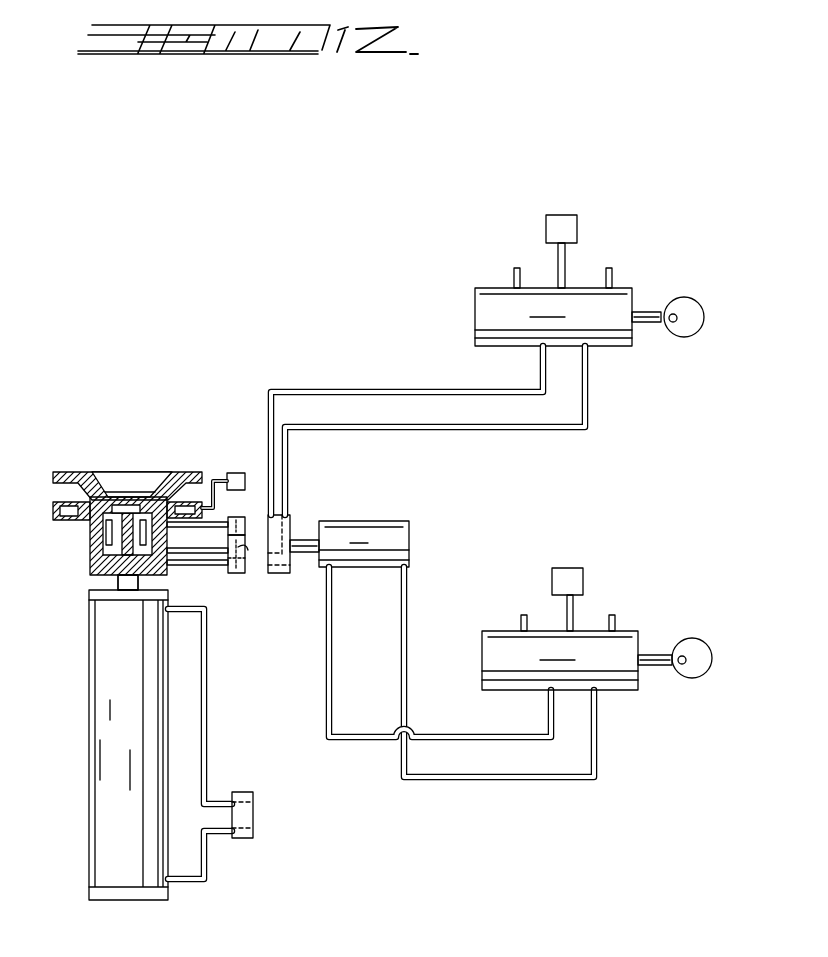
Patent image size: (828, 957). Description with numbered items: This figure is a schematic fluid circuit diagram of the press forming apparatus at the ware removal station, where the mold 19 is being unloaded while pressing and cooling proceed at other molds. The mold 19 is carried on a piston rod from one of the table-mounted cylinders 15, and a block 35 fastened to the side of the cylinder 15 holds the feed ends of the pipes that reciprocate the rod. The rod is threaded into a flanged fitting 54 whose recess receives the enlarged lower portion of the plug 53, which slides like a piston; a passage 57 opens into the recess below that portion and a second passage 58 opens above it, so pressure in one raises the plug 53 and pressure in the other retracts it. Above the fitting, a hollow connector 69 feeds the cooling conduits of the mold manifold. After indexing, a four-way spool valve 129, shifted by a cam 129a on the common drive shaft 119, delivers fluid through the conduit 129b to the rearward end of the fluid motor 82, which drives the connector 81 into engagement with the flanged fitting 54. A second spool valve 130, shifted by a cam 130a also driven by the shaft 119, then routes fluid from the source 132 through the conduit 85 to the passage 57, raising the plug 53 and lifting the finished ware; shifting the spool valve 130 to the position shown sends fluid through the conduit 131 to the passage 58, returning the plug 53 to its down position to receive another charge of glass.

The cylinder 15 is at (105, 683).
The mold 19 is at (65, 477).
The block 35 is at (253, 812).
The plug 53 is at (118, 500).
The flanged fitting 54 is at (234, 573).
The passage 57 is at (250, 548).
The passage 58 is at (236, 517).
The hollow connector 69 is at (250, 452).
The connector 81 is at (292, 520).
The fluid motor 82 is at (395, 538).
The conduit 85 is at (428, 432).
The common drive shaft 119 is at (682, 325).
The four-way spool valve 129 is at (622, 637).
The cam 129a is at (720, 625).
The conduit 129b is at (403, 613).
The spool valve 130 is at (500, 308).
The cam 130a is at (712, 270).
The conduit 131 is at (390, 368).
The source 132 is at (552, 223).